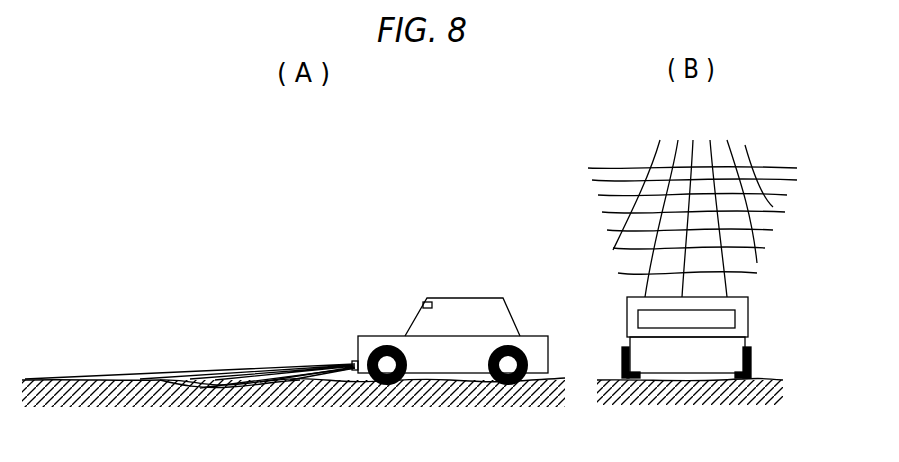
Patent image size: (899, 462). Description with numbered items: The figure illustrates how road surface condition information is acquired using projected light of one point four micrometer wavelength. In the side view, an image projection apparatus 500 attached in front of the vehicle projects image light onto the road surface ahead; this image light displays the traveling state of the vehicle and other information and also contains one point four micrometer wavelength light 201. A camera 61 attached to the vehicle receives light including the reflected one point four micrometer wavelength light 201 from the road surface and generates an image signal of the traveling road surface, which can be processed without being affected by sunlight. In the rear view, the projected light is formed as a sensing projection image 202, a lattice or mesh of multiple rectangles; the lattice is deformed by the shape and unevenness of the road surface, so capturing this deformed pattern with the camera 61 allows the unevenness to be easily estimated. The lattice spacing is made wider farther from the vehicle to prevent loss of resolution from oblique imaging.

The camera 61 is at (420, 280).
The image projection apparatus 500 is at (353, 363).
The 1.4 µm wavelength light 201 is at (175, 372).
The sensing projection image 202 is at (725, 195).